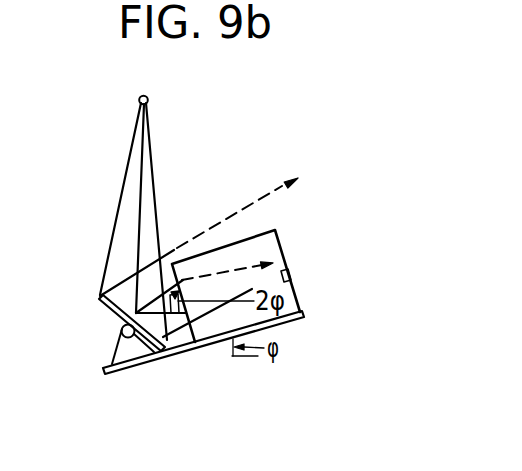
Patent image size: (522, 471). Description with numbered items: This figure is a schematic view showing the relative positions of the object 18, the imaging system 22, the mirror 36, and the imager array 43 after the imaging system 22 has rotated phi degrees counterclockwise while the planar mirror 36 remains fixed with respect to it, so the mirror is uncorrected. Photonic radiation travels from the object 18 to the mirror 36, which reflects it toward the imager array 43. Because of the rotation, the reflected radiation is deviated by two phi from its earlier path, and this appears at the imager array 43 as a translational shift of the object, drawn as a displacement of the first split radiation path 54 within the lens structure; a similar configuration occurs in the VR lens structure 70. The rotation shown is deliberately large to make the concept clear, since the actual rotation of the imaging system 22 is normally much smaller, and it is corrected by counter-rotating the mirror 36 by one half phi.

The object 18 is at (148, 98).
The imaging system 22 is at (88, 345).
The mirror 36 is at (100, 303).
The first split radiation path 54 is at (242, 264).
The imager array 43 is at (384, 246).
The VR lens structure 70 is at (306, 296).